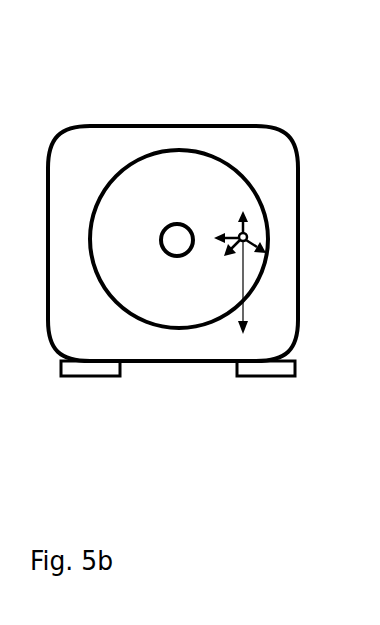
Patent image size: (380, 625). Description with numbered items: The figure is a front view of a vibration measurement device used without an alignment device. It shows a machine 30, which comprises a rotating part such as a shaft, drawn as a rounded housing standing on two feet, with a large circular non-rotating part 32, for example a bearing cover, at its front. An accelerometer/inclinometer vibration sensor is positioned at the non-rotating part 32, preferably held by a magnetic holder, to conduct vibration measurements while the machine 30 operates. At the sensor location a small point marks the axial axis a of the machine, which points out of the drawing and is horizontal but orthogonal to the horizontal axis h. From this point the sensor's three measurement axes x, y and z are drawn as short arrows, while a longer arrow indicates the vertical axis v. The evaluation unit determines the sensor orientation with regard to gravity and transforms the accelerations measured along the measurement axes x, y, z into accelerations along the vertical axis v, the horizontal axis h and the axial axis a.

The machine 30 is at (159, 104).
The non-rotating part 32 is at (190, 170).
The axial axis a is at (251, 232).
The horizontal axis h is at (219, 227).
The vertical axis v is at (250, 294).
The measurement axis x is at (223, 256).
The measurement axis y is at (263, 255).
The measurement axis z is at (242, 209).